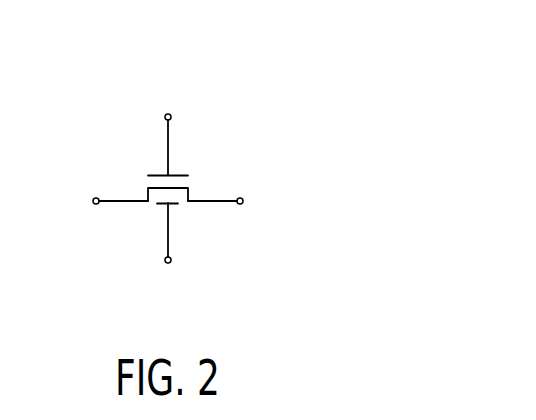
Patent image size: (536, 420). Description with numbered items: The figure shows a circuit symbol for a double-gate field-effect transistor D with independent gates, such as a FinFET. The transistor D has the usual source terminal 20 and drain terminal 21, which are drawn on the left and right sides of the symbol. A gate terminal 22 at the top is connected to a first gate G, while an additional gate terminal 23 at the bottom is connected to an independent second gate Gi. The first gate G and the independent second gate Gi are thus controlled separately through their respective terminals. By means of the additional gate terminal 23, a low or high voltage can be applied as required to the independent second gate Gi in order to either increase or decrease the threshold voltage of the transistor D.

The double-gate field-effect transistor D is at (222, 88).
The first gate G is at (149, 175).
The independent second gate Gi is at (163, 203).
The source terminal 20 is at (93, 200).
The drain terminal 21 is at (243, 200).
The gate terminal 22 is at (165, 115).
The additional gate terminal 23 is at (171, 263).